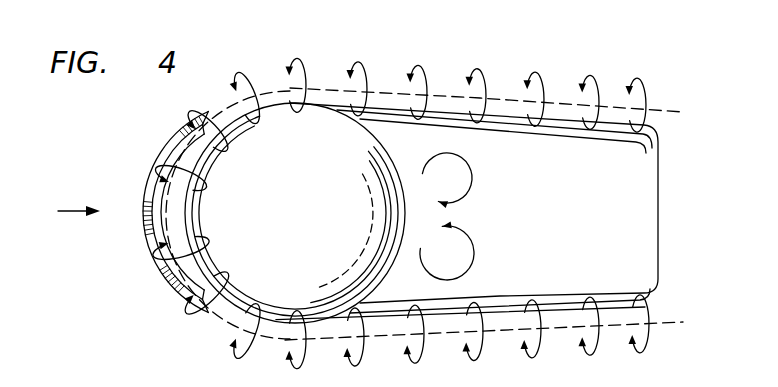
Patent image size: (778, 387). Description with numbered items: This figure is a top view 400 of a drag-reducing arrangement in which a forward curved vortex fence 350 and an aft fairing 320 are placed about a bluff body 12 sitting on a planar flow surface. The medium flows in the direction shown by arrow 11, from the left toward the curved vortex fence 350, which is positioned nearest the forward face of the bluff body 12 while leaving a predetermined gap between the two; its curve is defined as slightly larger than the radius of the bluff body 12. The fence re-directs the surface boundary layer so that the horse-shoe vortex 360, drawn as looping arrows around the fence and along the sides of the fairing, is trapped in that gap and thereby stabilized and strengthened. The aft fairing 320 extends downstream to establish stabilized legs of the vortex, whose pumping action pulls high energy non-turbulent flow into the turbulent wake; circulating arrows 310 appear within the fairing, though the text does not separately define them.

The arrow 11 is at (72, 208).
The bluff body 12 is at (220, 318).
The rotation direction 310 is at (472, 178).
The aft fairing 320 is at (654, 207).
The forward curved vortex fence 350 is at (158, 158).
The horse-shoe vortex 360 is at (300, 68).
The assembly 400 is at (90, 257).